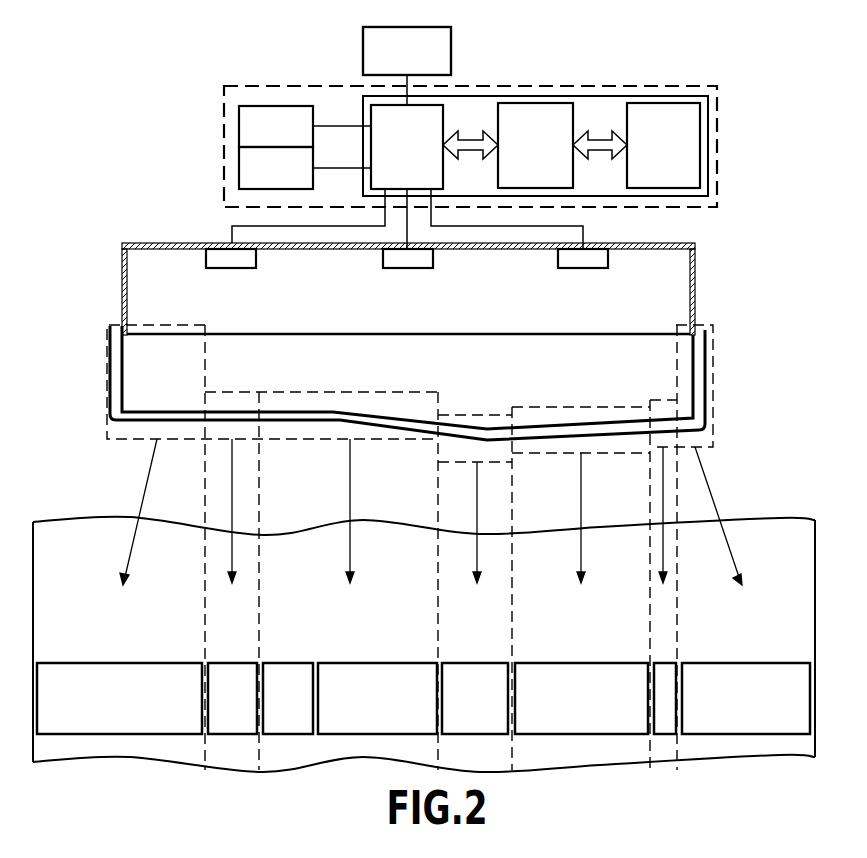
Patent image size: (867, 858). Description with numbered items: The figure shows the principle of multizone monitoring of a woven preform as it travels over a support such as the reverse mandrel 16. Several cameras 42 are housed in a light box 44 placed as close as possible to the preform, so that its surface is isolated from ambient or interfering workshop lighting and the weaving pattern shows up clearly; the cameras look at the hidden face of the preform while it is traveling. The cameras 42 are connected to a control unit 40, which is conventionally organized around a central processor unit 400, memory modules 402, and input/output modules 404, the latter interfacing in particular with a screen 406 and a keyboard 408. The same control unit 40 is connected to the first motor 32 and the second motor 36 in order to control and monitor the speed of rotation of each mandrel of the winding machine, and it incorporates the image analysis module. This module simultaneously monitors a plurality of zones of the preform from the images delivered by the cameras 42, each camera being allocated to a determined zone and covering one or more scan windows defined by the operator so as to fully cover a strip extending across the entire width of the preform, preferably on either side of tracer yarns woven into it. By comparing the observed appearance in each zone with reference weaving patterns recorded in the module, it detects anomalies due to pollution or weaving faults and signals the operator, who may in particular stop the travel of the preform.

The reverse mandrel 16 is at (110, 401).
The first motor 32 is at (375, 66).
The second motor 36 is at (419, 66).
The control unit 40 is at (717, 143).
The cameras 42 is at (232, 268).
The light box 44 is at (122, 267).
The central processor unit 400 is at (519, 158).
The memory modules 402 is at (646, 158).
The input/output modules 404 is at (390, 160).
The screen 406 is at (259, 139).
The keyboard 408 is at (259, 181).